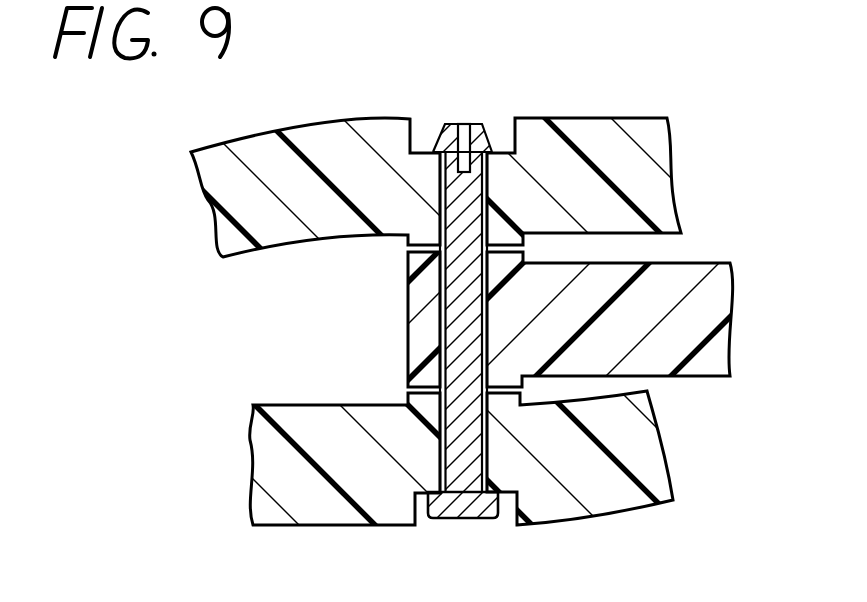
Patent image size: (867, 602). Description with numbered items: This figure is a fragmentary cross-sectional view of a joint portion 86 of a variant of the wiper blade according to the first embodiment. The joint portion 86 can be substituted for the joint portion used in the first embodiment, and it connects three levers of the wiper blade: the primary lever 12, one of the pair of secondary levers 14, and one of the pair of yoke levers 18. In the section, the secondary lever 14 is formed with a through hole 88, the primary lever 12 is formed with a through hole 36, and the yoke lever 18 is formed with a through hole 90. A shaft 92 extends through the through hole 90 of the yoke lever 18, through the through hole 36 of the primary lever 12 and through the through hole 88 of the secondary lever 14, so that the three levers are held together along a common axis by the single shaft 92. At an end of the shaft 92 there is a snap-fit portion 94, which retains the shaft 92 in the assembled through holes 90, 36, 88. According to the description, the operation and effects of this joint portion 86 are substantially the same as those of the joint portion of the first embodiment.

The primary lever 12 is at (690, 262).
The secondary lever 14 is at (277, 130).
The yoke lever 18 is at (315, 527).
The through hole 36 is at (447, 312).
The joint portion 86 is at (433, 301).
The through hole 88 is at (473, 205).
The through hole 90 is at (453, 448).
The shaft 92 is at (473, 518).
The snap-fit portion 94 is at (437, 136).